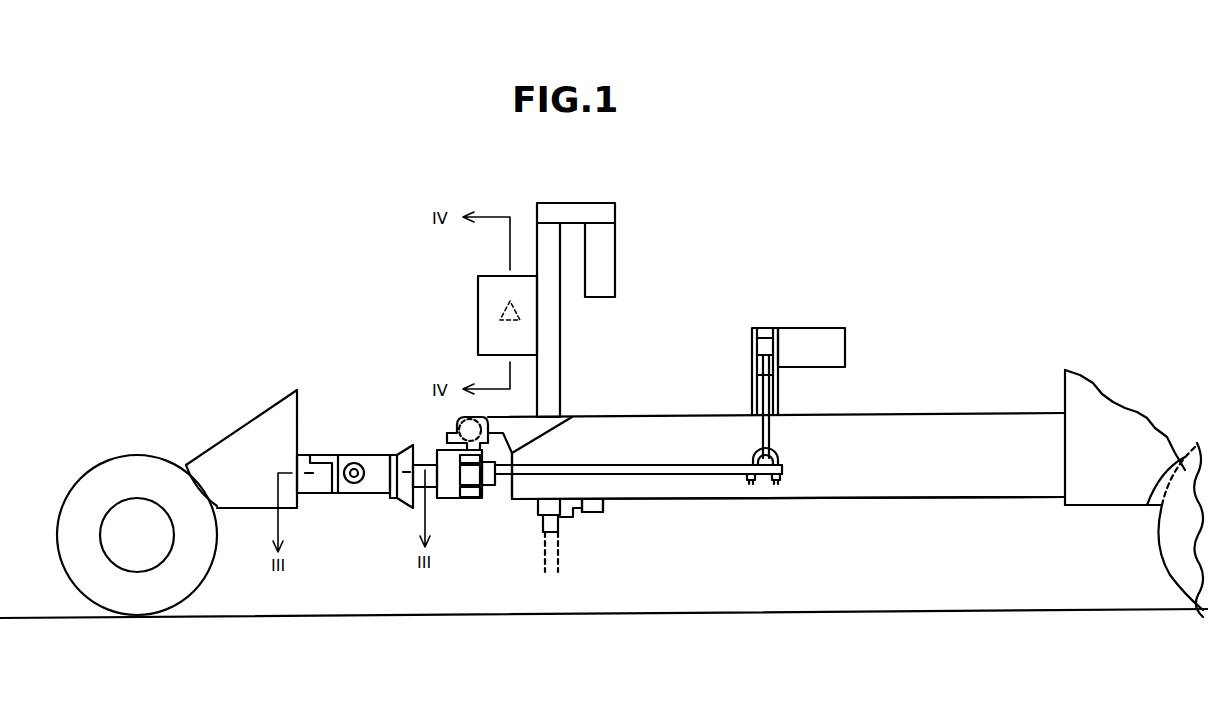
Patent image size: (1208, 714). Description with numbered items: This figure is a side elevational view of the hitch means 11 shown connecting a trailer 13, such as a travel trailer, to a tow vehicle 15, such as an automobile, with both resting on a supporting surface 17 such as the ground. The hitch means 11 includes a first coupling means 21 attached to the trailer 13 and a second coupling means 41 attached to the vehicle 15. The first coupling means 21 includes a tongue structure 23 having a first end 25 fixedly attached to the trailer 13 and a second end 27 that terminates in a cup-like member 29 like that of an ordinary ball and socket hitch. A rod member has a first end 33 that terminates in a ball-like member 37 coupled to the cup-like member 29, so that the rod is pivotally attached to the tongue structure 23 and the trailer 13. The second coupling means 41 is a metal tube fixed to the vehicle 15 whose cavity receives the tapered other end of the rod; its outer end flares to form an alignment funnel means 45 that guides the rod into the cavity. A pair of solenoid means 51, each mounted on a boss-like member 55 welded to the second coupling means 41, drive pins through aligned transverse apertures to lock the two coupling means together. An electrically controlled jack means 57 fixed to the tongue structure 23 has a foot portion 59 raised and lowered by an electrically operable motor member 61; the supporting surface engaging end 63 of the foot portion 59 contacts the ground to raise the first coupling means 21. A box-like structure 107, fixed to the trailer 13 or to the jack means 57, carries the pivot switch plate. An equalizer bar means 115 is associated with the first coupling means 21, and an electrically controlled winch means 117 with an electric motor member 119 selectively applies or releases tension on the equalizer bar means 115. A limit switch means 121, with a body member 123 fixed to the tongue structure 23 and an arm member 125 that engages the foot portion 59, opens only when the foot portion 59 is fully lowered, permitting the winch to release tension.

The hitch means 11 is at (752, 133).
The trailer 13 is at (1118, 413).
The tow vehicle 15 is at (253, 432).
The supporting surface 17 is at (773, 610).
The first coupling means 21 is at (663, 503).
The tongue structure 23 is at (895, 483).
The first end 25 is at (1055, 482).
The second end 27 is at (513, 500).
The cup-like member 29 is at (457, 418).
The first end 33 is at (435, 457).
The ball-like member 37 is at (458, 443).
The second coupling means 41 is at (360, 497).
The alignment funnel means 45 is at (408, 505).
The solenoid means 51 is at (358, 447).
The boss-like member 55 is at (333, 483).
The jack means 57 is at (563, 367).
The foot portion 59 is at (558, 523).
The motor member 61 is at (607, 257).
The supporting surface engaging end 63 is at (548, 530).
The structure 107 is at (492, 305).
The equalizer bar means 115 is at (620, 465).
The winch means 117 is at (775, 320).
The electric motor member 119 is at (815, 342).
The limit switch means 121 is at (602, 505).
The body member 123 is at (603, 503).
The arm member 125 is at (573, 513).